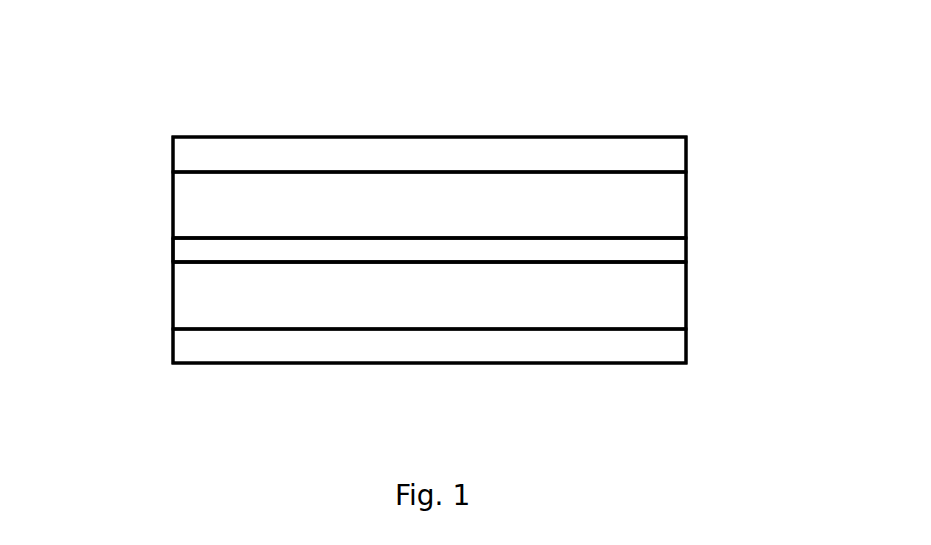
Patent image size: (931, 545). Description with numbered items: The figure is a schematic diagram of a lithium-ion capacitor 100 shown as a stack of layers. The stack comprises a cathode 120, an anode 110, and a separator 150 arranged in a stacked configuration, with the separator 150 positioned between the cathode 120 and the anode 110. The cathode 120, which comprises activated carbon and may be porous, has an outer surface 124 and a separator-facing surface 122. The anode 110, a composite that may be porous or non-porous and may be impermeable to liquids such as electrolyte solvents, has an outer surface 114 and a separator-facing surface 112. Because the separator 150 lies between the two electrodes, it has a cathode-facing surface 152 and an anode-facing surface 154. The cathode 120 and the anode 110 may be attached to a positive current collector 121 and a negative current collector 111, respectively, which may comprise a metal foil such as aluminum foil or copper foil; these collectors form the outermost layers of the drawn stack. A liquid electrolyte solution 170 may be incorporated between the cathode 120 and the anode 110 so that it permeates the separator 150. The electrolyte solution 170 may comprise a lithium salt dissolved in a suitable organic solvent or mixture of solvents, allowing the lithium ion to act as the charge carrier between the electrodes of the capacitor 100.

The lithium-ion capacitor 100 is at (657, 99).
The anode 110 is at (656, 205).
The negative current collector 111 is at (664, 158).
The separator-facing surface of the anode 112 is at (595, 239).
The outer surface of the anode 114 is at (296, 171).
The cathode 120 is at (658, 300).
The positive current collector 121 is at (665, 344).
The separator-facing surface of the cathode 122 is at (548, 262).
The outer surface of the cathode 124 is at (310, 330).
The separator 150 is at (663, 249).
The cathode-facing surface of the separator 152 is at (442, 263).
The anode-facing surface of the separator 154 is at (432, 237).
The liquid electrolyte solution 170 is at (159, 240).